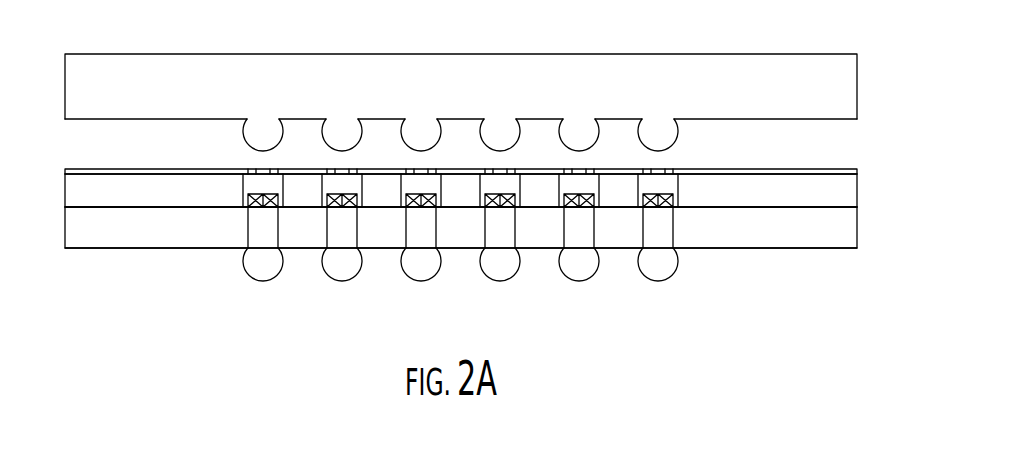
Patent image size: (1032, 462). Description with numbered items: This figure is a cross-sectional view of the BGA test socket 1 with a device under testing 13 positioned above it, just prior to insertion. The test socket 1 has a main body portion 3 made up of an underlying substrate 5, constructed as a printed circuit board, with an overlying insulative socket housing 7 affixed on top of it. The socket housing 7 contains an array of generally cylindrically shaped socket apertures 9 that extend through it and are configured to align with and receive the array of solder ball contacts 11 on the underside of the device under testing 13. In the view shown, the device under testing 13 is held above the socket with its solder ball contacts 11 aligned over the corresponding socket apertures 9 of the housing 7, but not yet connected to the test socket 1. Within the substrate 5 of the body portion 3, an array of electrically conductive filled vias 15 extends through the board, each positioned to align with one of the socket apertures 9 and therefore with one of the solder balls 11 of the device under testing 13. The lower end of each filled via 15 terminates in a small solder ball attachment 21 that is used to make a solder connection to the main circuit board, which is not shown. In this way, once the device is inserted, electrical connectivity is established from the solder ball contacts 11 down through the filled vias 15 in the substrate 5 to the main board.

The BGA test socket 1 is at (872, 182).
The main body portion 3 is at (60, 167).
The substrate 5 is at (850, 233).
The socket housing 7 is at (850, 195).
The socket apertures 9 is at (679, 193).
The solder ball contacts 11 is at (250, 135).
The device under testing 13 is at (768, 73).
The filled vias 15 is at (268, 233).
The solder ball attachment 21 is at (262, 267).